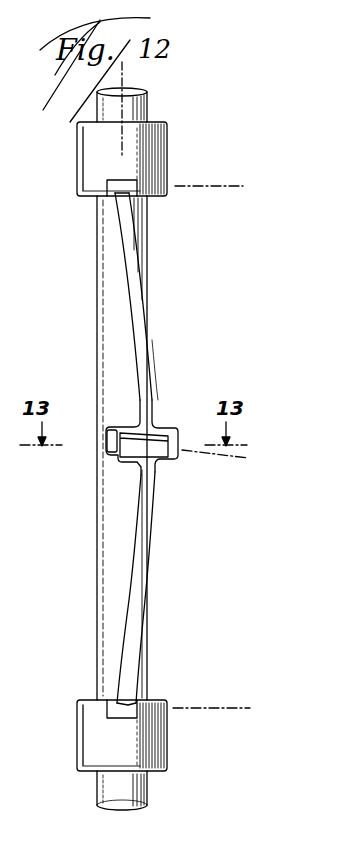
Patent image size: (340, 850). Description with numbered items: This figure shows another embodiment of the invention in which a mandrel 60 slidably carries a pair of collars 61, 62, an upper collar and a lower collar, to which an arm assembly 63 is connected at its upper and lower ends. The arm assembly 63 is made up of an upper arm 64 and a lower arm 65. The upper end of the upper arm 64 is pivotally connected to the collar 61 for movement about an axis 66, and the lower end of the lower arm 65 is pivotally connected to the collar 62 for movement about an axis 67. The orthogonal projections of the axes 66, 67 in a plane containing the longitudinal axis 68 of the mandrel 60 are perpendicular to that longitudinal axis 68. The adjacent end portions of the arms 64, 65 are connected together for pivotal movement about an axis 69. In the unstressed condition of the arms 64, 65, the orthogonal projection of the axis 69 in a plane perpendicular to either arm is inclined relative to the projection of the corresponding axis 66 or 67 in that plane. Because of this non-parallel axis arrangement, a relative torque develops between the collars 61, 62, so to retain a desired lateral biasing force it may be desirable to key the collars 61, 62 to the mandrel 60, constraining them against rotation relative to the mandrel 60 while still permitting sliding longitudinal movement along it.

The mandrel 60 is at (147, 235).
The collar 61 is at (167, 150).
The collar 62 is at (167, 745).
The arm assembly 63 is at (162, 372).
The upper arm 64 is at (143, 322).
The lower arm 65 is at (138, 583).
The axis 66 is at (190, 188).
The axis 67 is at (200, 708).
The longitudinal axis 68 is at (122, 78).
The axis 69 is at (238, 462).